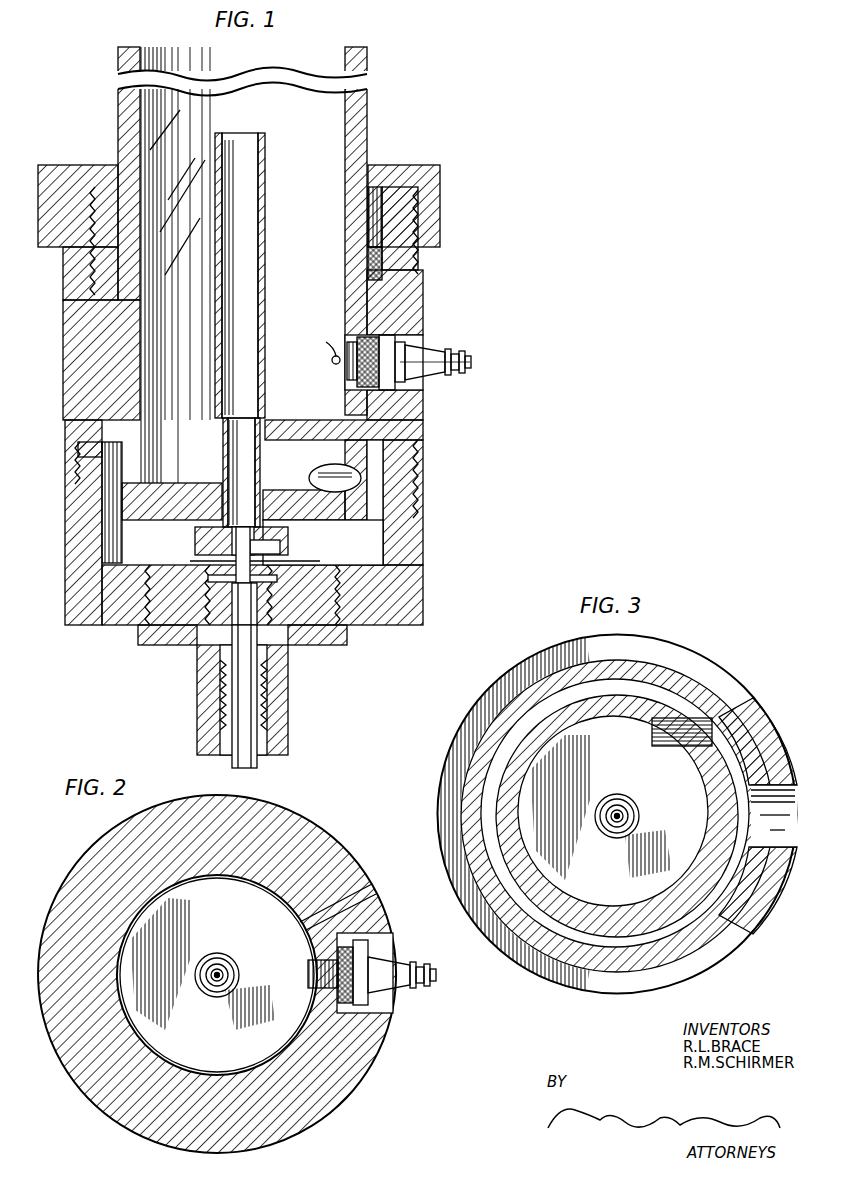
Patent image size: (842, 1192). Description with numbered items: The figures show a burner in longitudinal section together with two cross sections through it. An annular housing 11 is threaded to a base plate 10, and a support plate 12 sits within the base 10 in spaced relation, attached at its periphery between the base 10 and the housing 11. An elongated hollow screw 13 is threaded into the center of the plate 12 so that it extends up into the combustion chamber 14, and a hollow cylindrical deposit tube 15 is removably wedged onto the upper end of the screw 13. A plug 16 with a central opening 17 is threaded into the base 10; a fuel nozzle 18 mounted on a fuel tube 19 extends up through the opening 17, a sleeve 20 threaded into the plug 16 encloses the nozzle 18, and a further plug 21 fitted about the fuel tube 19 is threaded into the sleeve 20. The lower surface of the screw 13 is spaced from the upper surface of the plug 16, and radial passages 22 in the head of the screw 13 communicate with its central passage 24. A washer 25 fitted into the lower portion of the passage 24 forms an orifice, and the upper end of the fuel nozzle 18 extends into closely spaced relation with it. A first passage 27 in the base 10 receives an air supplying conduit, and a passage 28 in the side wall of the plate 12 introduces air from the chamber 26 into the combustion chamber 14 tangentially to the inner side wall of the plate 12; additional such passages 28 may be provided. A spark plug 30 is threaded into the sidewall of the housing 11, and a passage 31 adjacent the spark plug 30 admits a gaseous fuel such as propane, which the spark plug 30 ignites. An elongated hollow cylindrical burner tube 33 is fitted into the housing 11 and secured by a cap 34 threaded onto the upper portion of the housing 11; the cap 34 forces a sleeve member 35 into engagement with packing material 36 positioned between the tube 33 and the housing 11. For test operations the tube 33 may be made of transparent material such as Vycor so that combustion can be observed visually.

In FIG. 1, the base plate 10 is at (392, 625).
In FIG. 3, the base plate 10 is at (775, 730).
In FIG. 1, the annular housing 11 is at (423, 288).
In FIG. 2, the annular housing 11 is at (355, 862).
In FIG. 1, the support plate 12 is at (102, 492).
In FIG. 3, the support plate 12 is at (612, 706).
In FIG. 1, the elongated hollow screw 13 is at (288, 540).
In FIG. 2, the elongated hollow screw 13 is at (236, 970).
In FIG. 3, the elongated hollow screw 13 is at (630, 800).
In FIG. 1, the combustion chamber 14 is at (303, 389).
In FIG. 1, the hollow cylindrical deposit tube 15 is at (265, 210).
In FIG. 2, the hollow cylindrical deposit tube 15 is at (226, 965).
In FIG. 1, the plug 16 is at (155, 645).
In FIG. 1, the central opening 17 is at (200, 558).
In FIG. 1, the fuel nozzle 18 is at (230, 632).
In FIG. 2, the fuel nozzle 18 is at (196, 983).
In FIG. 3, the fuel nozzle 18 is at (628, 812).
In FIG. 1, the fuel tube 19 is at (257, 760).
In FIG. 1, the sleeve 20 is at (288, 660).
In FIG. 1, the plug 21 is at (288, 738).
In FIG. 1, the radial passages 22 is at (280, 548).
In FIG. 1, the central passage 24 is at (260, 455).
In FIG. 1, the washer 25 is at (215, 488).
In FIG. 2, the washer 25 is at (232, 980).
In FIG. 3, the washer 25 is at (628, 820).
In FIG. 1, the chamber 26 is at (378, 557).
In FIG. 1, the first passage 27 is at (423, 497).
In FIG. 1, the passage 28 is at (335, 464).
In FIG. 3, the passage 28 is at (672, 736).
In FIG. 1, the spark plug 30 is at (425, 375).
In FIG. 2, the spark plug 30 is at (400, 962).
In FIG. 1, the passage 31 is at (319, 351).
In FIG. 2, the passage 31 is at (376, 886).
In FIG. 1, the burner tube 33 is at (367, 94).
In FIG. 1, the cap 34 is at (392, 166).
In FIG. 1, the sleeve member 35 is at (364, 205).
In FIG. 1, the packing material 36 is at (364, 260).